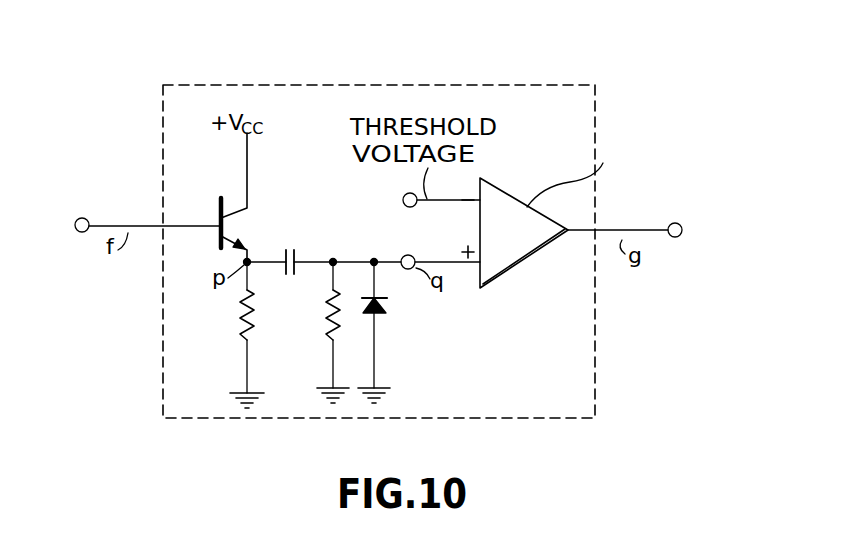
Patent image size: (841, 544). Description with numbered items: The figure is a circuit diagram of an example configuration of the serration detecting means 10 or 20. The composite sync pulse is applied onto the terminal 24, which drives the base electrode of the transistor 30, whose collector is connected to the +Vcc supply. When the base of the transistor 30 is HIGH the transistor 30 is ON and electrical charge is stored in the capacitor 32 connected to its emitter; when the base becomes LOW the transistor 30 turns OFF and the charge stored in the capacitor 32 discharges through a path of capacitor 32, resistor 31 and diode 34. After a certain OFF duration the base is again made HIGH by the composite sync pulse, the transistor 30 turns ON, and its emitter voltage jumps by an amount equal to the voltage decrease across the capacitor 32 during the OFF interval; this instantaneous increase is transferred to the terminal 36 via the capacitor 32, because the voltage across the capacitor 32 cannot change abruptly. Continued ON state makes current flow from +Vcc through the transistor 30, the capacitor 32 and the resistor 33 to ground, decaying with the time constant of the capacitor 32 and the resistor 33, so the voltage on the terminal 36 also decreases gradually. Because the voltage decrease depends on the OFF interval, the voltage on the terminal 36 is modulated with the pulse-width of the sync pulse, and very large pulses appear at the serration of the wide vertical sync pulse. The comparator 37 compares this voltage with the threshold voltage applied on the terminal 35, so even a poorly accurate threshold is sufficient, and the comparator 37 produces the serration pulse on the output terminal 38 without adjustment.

The serration detecting means 10 is at (340, 50).
The serration detecting means 20 is at (328, 62).
The terminal 24 is at (76, 231).
The transistor 30 is at (230, 229).
The resistor 31 is at (240, 306).
The capacitor 32 is at (295, 251).
The resistor 33 is at (322, 332).
The diode 34 is at (392, 332).
The terminal 35 is at (403, 200).
The terminal 36 is at (410, 255).
The comparator 37 is at (513, 242).
The output terminal 38 is at (683, 225).